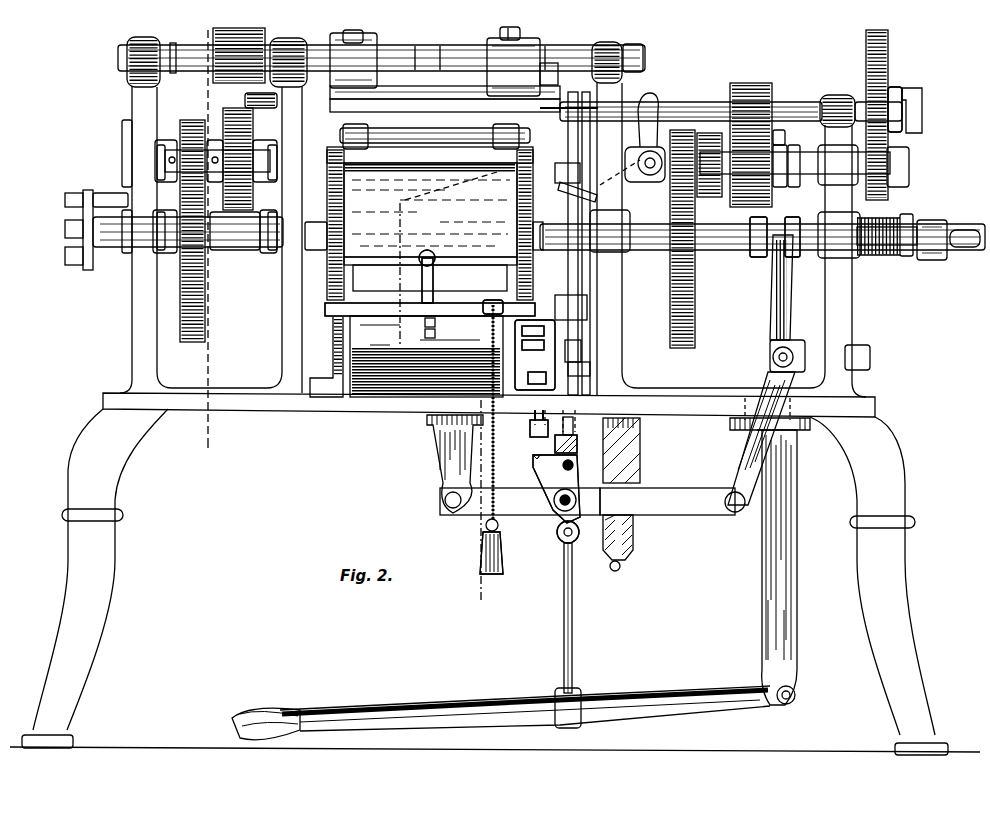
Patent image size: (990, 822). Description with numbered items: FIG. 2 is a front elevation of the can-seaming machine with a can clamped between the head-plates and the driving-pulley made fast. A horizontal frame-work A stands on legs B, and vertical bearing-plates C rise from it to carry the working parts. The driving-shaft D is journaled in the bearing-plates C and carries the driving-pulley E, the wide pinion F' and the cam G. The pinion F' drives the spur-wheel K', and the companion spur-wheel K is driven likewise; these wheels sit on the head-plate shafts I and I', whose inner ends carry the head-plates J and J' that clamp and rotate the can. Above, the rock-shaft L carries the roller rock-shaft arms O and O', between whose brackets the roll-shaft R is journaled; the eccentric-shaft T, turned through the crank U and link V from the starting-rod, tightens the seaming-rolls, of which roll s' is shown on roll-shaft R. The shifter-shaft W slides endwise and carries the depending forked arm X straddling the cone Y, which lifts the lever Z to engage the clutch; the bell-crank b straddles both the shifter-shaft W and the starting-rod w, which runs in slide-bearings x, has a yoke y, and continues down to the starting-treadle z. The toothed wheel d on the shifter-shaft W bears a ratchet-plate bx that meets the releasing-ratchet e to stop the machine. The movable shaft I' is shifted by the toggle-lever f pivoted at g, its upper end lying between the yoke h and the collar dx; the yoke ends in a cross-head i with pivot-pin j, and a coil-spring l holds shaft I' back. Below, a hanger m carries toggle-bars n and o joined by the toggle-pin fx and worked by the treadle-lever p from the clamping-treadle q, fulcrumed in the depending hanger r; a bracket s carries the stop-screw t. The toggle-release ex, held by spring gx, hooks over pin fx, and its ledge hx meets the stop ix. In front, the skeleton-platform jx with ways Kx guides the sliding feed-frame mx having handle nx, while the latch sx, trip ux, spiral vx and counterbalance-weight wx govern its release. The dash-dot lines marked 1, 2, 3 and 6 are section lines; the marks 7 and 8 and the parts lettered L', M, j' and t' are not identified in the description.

The section line 1 is at (508, 25).
The section line 2 is at (455, 178).
The section line 3 is at (270, 710).
The section line 6 is at (479, 508).
The section line 7 is at (206, 225).
The section line end 8 is at (203, 453).
The frame-work A is at (489, 404).
The legs B is at (485, 582).
The bearing-plates C is at (493, 217).
The driving-shaft D is at (122, 162).
The driving-pulley E is at (772, 90).
The pinion F' is at (709, 171).
The cam G is at (238, 159).
The head-plate shaft I is at (174, 232).
The head-plate shaft I' is at (762, 250).
The head-plate J is at (322, 225).
The head-plate J' is at (534, 225).
The spur-wheel K is at (546, 231).
The spur-wheel K' is at (695, 239).
The ways Kx is at (325, 306).
The rock-shaft L is at (430, 48).
The collar L' is at (553, 54).
The drum M is at (245, 68).
The roller rock-shaft arm O is at (381, 56).
The roller rock-shaft arm O' is at (519, 58).
The roll-shaft R is at (435, 132).
The eccentric-shaft T is at (445, 93).
The crank U is at (549, 74).
The link V is at (566, 133).
The shifter-shaft W is at (697, 100).
The depending forked arm X is at (794, 174).
The cone Y is at (779, 174).
The lever Z is at (569, 116).
The bell-crank b is at (632, 133).
The ratchet-plate bx is at (897, 97).
The toothed wheel d is at (877, 105).
The collar dx is at (796, 246).
The releasing-ratchet e is at (912, 100).
The toggle-release ex is at (578, 470).
The toggle-lever f is at (761, 370).
The toggle-pin fx is at (557, 528).
The pivot g is at (772, 357).
The coil-spring gx is at (577, 440).
The yoke h is at (887, 251).
The ledge hx is at (536, 461).
The cross-head i is at (932, 247).
The stop ix is at (530, 432).
The pivot-pin j is at (969, 236).
The bracket j' is at (323, 357).
The skeleton-platform jx is at (483, 313).
The coil-spring l is at (878, 226).
The hanger m is at (455, 464).
The sliding feed-frame mx is at (433, 283).
The toggle-bar n is at (520, 501).
The handle nx is at (428, 249).
The toggle-bar o is at (680, 500).
The treadle-lever p is at (572, 613).
The clamping-treadle q is at (540, 728).
The depending hanger r is at (777, 567).
The depending bracket s is at (491, 299).
The seaming-roll s' is at (502, 133).
The pivoted latch sx is at (533, 332).
The stop-screw t is at (625, 543).
The block t' is at (576, 307).
The trip ux is at (545, 375).
The spiral vx is at (533, 345).
The starting-rod w is at (576, 227).
The counterbalance-weight wx is at (503, 552).
The slide-bearings x is at (583, 373).
The yoke y is at (577, 352).
The starting-treadle z is at (773, 137).